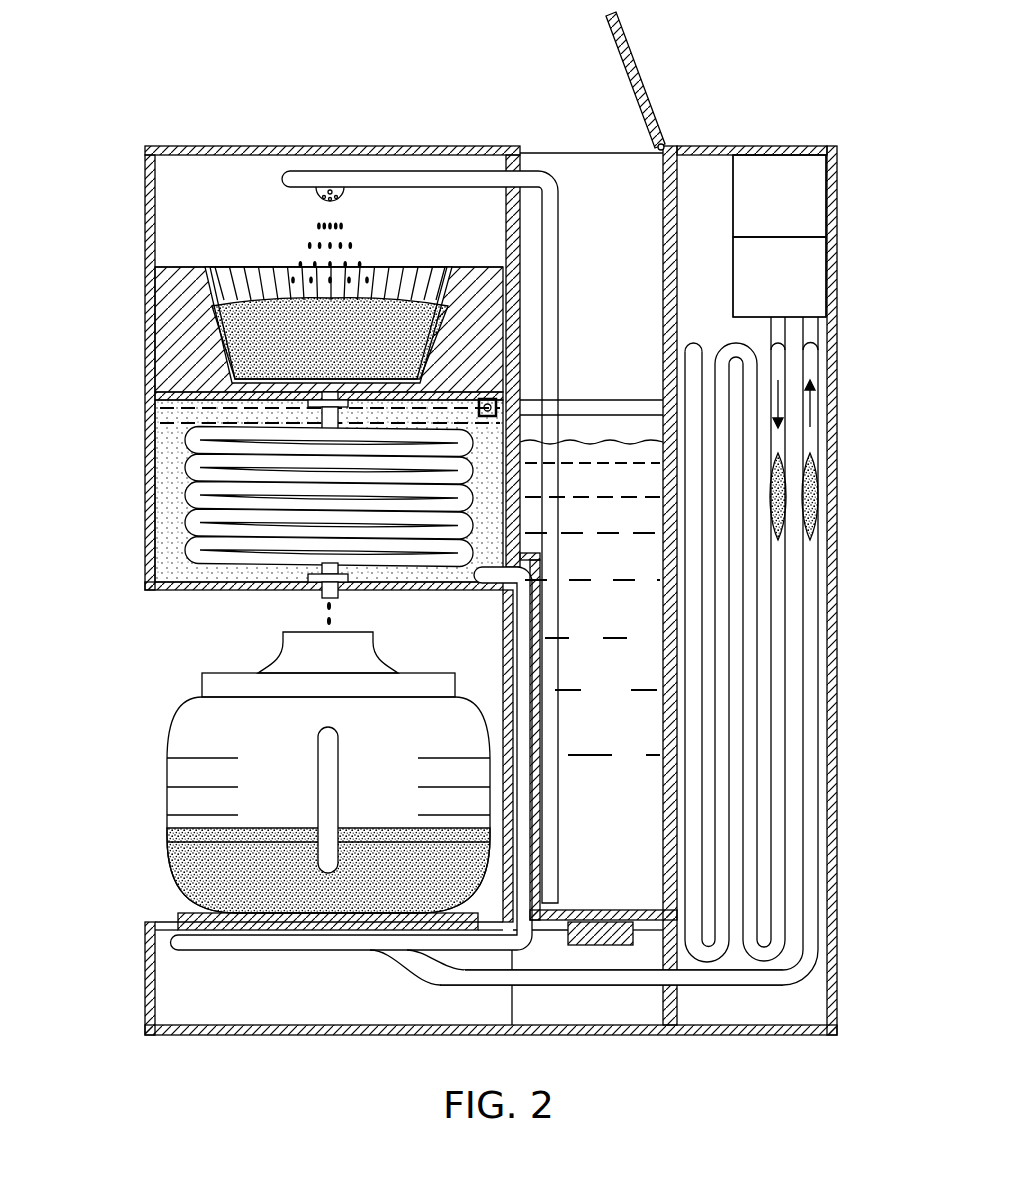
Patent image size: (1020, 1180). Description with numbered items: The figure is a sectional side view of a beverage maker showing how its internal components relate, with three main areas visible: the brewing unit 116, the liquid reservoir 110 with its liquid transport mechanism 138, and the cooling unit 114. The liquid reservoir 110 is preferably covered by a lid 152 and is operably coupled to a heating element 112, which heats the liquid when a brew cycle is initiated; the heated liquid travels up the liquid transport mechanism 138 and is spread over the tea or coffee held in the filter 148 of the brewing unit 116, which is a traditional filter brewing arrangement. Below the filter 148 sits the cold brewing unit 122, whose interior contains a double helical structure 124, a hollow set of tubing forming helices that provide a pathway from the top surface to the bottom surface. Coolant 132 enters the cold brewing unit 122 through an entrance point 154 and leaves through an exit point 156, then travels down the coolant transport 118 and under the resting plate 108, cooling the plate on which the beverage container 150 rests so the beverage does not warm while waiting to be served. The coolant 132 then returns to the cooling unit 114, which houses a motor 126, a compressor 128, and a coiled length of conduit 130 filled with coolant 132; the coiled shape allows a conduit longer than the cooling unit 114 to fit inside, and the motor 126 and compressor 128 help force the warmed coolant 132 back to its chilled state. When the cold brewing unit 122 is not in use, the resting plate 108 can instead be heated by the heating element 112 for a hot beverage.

The resting plate 108 is at (190, 912).
The liquid reservoir 110 is at (596, 440).
The heating element 112 is at (600, 945).
The cooling unit 114 is at (862, 347).
The brewing unit 116 is at (137, 590).
The coolant transport 118 is at (502, 862).
The cold brewing unit 122 is at (226, 605).
The double helical structure 124 is at (190, 497).
The motor 126 is at (800, 207).
The compressor 128 is at (800, 289).
The length of conduit 130 is at (812, 572).
The coolant 132 is at (817, 487).
The liquid transport mechanism 138 is at (552, 178).
The filter 148 is at (208, 302).
The carafe 150 is at (165, 722).
The lid 152 is at (636, 70).
The entrance point 154 is at (488, 398).
The exit point 156 is at (482, 586).